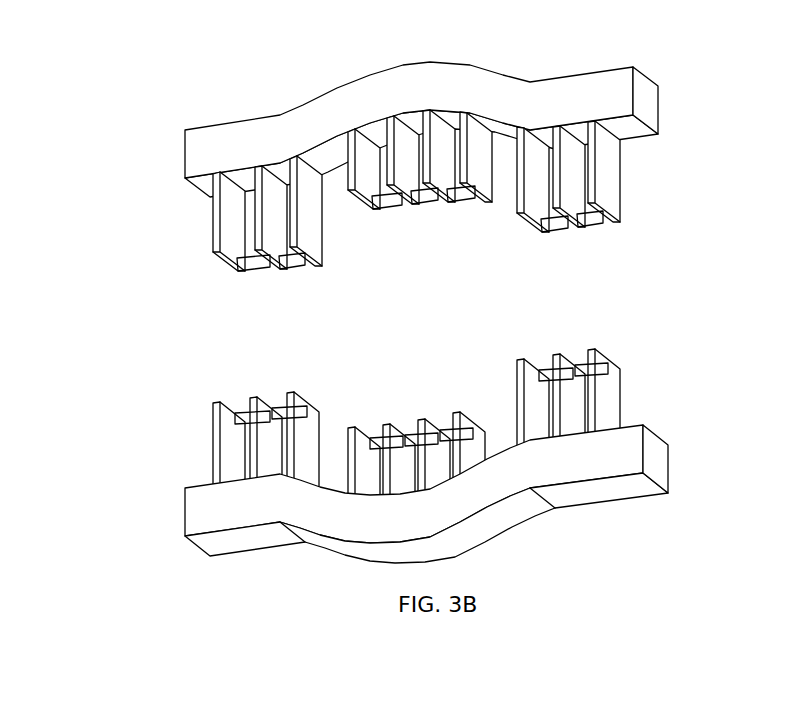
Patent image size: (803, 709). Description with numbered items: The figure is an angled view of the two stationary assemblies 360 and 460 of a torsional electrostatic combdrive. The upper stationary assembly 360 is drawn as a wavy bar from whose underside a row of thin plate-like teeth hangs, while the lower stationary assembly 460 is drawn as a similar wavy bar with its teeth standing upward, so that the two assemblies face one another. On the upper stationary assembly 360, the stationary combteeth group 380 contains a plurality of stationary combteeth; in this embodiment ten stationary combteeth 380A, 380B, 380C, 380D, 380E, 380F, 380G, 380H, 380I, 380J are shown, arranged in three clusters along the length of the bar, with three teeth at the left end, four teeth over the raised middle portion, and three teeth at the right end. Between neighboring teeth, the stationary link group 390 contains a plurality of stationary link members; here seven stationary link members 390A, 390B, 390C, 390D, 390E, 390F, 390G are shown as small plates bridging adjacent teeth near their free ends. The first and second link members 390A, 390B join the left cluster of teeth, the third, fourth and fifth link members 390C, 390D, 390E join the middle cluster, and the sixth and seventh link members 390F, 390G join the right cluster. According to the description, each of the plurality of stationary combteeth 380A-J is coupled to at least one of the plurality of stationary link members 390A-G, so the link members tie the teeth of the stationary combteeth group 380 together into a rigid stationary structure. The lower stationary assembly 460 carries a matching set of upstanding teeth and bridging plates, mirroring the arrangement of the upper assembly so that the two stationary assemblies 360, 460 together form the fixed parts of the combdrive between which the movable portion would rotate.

The stationary assembly 360 is at (369, 170).
The stationary combteeth group 380 is at (362, 142).
The stationary combtooth 380A is at (215, 188).
The stationary combtooth 380B is at (249, 188).
The stationary combtooth 380C is at (285, 186).
The stationary combtooth 380D is at (352, 140).
The stationary combtooth 380E is at (383, 130).
The stationary combtooth 380F is at (418, 128).
The stationary combtooth 380G is at (457, 115).
The stationary combtooth 380H is at (520, 140).
The stationary combtooth 380I is at (557, 137).
The stationary combtooth 380J is at (593, 133).
The stationary link group 390 is at (456, 246).
The stationary link member 390A is at (252, 270).
The stationary link member 390B is at (287, 267).
The stationary link member 390C is at (388, 203).
The stationary link member 390D is at (420, 203).
The stationary link member 390E is at (457, 197).
The stationary link member 390F is at (557, 227).
The stationary link member 390G is at (598, 244).
The stationary assembly 460 is at (108, 490).